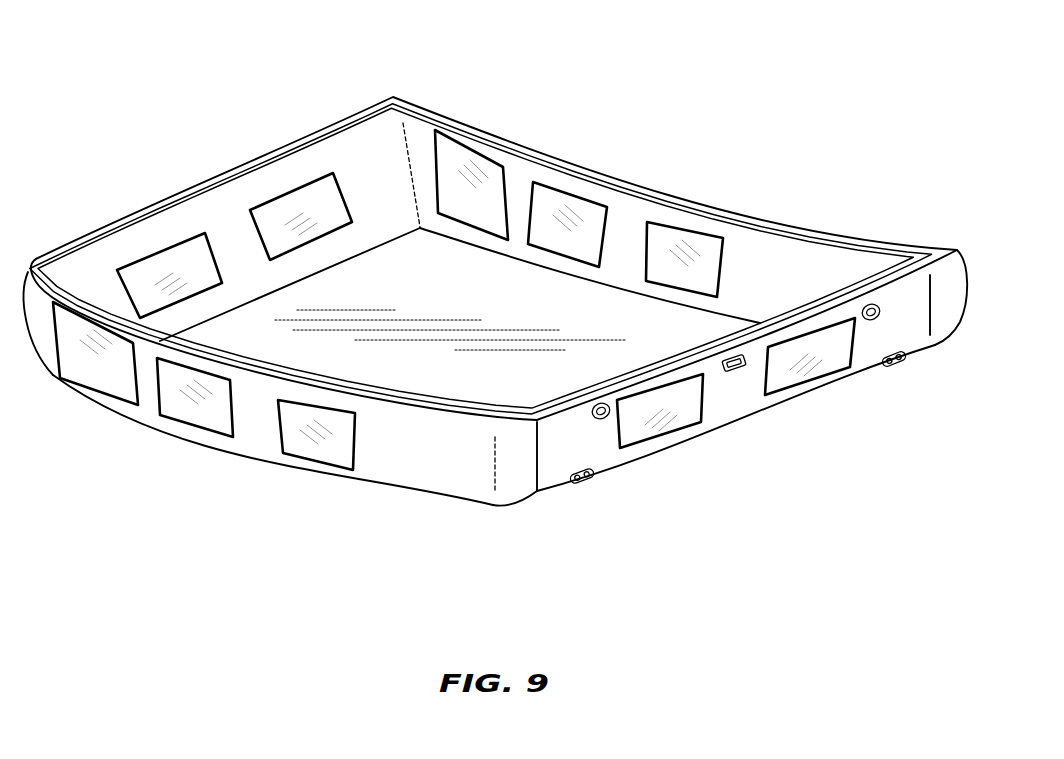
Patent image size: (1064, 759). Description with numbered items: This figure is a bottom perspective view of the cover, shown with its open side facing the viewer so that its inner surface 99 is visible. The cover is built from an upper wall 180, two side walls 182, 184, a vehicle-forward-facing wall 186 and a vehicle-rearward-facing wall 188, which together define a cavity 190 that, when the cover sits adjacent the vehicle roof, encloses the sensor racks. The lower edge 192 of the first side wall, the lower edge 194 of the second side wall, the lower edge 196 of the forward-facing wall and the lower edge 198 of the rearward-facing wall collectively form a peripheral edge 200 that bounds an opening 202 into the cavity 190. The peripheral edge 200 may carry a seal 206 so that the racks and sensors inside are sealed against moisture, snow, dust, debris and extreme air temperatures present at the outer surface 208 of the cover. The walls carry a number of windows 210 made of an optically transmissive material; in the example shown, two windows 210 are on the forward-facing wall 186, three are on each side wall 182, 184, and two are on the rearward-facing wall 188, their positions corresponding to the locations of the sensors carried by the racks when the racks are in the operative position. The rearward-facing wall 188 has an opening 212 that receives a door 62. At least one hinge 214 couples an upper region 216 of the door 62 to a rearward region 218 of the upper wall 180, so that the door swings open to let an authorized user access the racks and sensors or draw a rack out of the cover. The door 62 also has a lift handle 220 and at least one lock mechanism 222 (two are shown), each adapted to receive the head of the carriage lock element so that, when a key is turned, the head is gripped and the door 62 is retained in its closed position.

The door 62 is at (942, 324).
The inner surface 99 is at (525, 189).
The upper wall 180 is at (440, 353).
The side wall 182 is at (747, 257).
The side wall 184 is at (437, 485).
The vehicle-forward-facing wall 186 is at (240, 196).
The vehicle-rearward-facing wall 188 is at (953, 297).
The cavity 190 is at (780, 294).
The lower edge 192 is at (650, 203).
The lower edge 194 is at (396, 404).
The lower edge 196 is at (137, 213).
The lower edge 198 is at (554, 411).
The peripheral edge 200 is at (880, 230).
The opening 202 is at (900, 263).
The seal 206 is at (553, 166).
The outer surface 208 is at (380, 472).
The window 210 is at (450, 117).
The opening 212 is at (543, 445).
The hinge 214 is at (587, 481).
The upper region 216 is at (730, 420).
The rearward region 218 is at (522, 497).
The lift handle 220 is at (737, 371).
The lock mechanism 222 is at (603, 423).